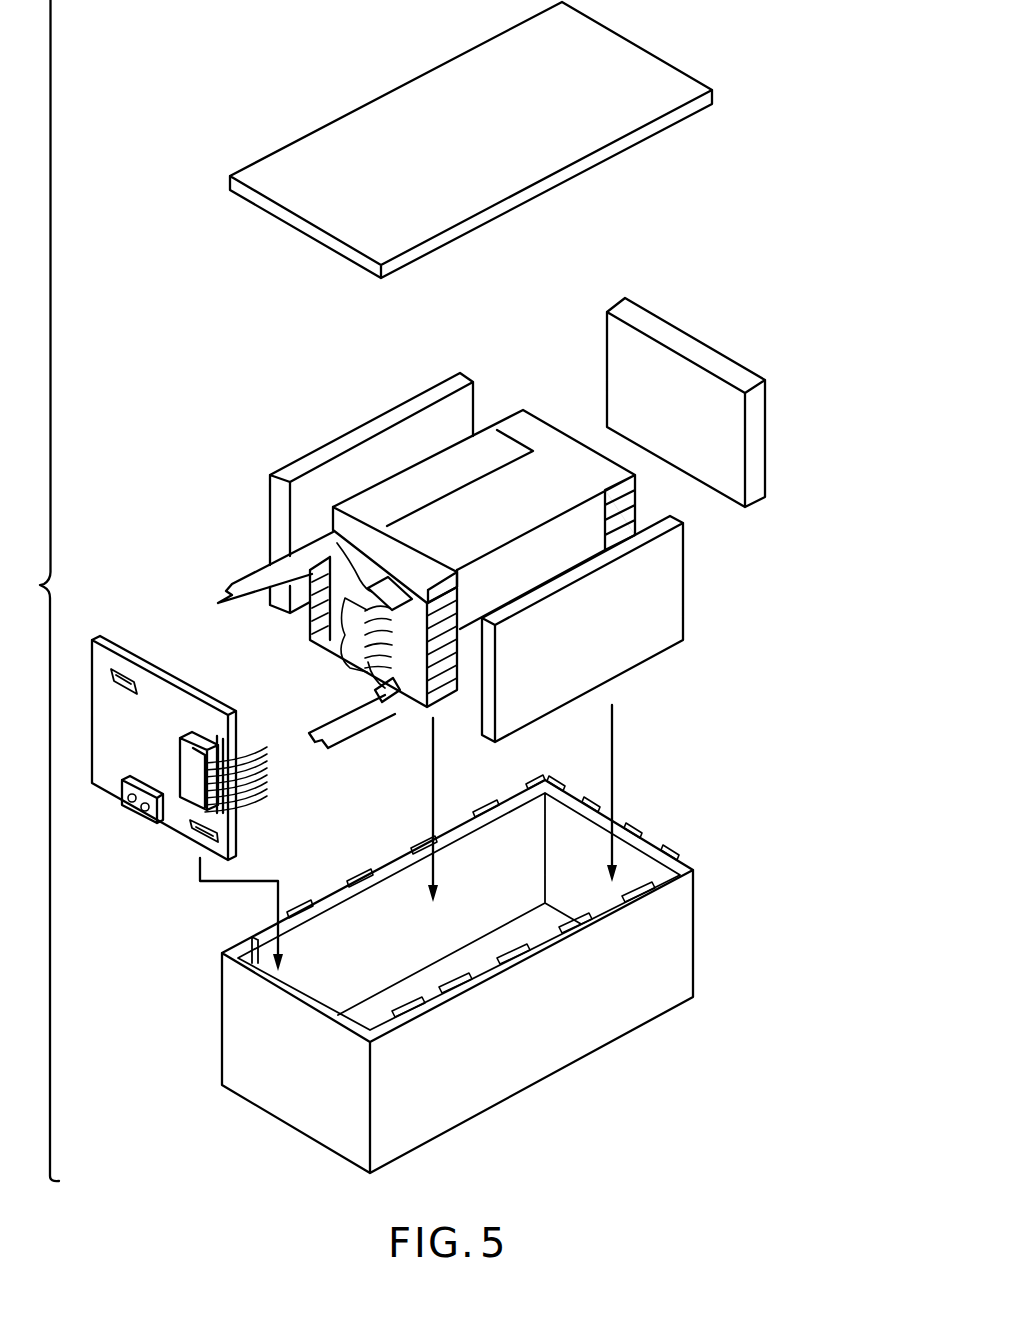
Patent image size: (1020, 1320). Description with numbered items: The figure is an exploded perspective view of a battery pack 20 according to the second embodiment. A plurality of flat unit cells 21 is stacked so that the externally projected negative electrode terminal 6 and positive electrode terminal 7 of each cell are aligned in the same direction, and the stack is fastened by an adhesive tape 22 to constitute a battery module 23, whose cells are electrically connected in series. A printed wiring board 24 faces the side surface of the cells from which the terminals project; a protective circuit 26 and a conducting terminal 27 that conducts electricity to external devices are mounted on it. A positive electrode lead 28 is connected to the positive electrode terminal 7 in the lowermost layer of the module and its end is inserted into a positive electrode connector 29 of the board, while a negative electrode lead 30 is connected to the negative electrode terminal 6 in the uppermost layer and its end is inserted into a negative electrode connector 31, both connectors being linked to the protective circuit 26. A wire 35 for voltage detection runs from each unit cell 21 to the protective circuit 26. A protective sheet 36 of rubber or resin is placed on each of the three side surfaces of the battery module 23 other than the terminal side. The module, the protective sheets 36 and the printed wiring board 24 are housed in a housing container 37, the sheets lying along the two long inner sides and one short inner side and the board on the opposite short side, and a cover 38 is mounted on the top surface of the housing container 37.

The battery pack 20 is at (131, 167).
The cover 38 is at (653, 75).
The protective sheet 36 is at (338, 448).
The adhesive tape 22 is at (542, 488).
The battery module 23 is at (514, 400).
The unit cell 21 is at (640, 525).
The wire for voltage detection 35 is at (345, 637).
The negative electrode terminal 6 is at (320, 537).
The positive electrode terminal 7 is at (397, 595).
The negative electrode lead 30 is at (232, 586).
The positive electrode lead 28 is at (352, 728).
The printed wiring board 24 is at (124, 646).
The negative electrode connector 31 is at (128, 680).
The protective circuit 26 is at (195, 737).
The conducting terminal 27 is at (143, 820).
The positive electrode connector 29 is at (218, 838).
The housing container 37 is at (683, 938).